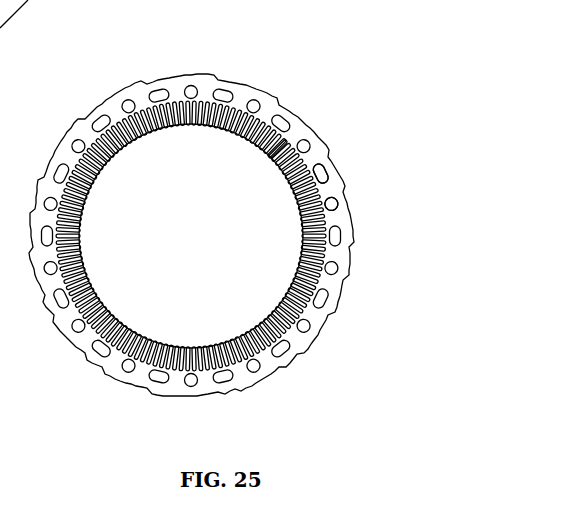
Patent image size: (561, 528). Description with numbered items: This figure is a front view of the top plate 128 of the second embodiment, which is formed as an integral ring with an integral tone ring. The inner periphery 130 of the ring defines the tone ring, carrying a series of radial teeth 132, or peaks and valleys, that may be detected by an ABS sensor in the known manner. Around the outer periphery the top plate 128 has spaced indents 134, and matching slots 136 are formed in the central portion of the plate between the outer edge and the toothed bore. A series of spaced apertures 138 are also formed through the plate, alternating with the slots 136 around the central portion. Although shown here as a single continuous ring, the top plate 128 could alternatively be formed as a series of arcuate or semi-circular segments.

The top plate 128 is at (263, 66).
The inner periphery 130 is at (238, 131).
The radial teeth 132 is at (285, 142).
The spaced indents 134 is at (338, 166).
The slots 136 is at (322, 177).
The spaced apertures 138 is at (335, 206).